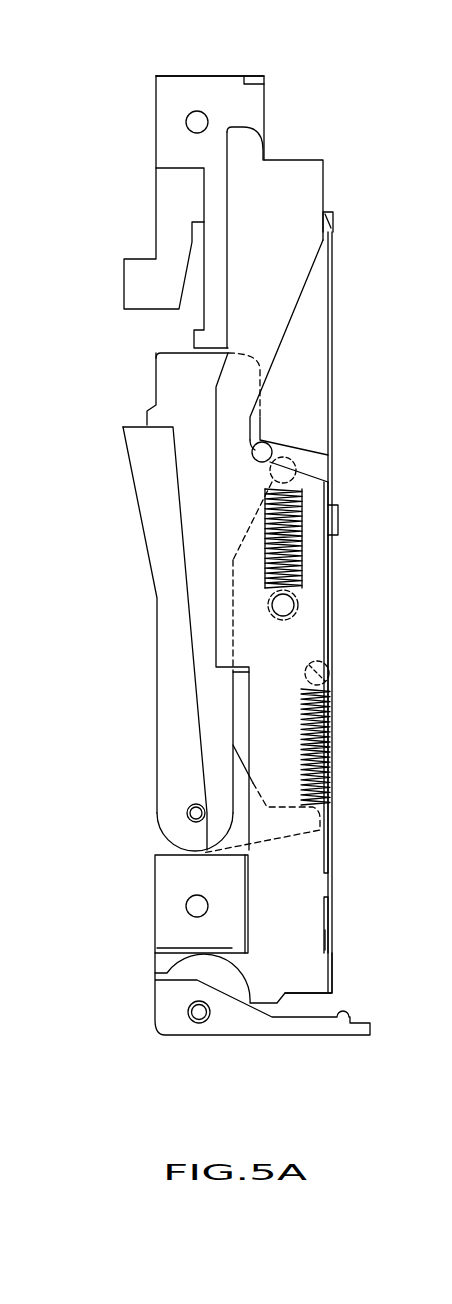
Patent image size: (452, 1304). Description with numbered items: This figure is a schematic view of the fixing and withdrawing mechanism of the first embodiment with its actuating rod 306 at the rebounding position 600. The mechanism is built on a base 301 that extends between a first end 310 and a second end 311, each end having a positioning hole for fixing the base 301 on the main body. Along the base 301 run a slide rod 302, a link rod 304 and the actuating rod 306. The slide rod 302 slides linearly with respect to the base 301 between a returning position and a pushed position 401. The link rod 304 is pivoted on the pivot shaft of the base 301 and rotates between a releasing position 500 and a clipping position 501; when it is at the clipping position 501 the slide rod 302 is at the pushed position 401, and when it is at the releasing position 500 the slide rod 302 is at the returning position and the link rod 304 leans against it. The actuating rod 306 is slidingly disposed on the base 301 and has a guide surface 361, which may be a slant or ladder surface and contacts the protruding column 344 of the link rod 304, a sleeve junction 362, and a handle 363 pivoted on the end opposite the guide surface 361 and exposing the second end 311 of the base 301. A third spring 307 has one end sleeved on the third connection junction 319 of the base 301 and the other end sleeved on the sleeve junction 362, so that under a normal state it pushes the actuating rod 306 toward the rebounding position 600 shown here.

The clipping position 501 is at (124, 93).
The base 301 is at (198, 83).
The first end 310 is at (156, 128).
The pushed position 401 is at (148, 168).
The releasing position 500 is at (305, 96).
The rebounding position 600 is at (330, 158).
The slide rod 302 is at (155, 332).
The guide surface 361 is at (283, 338).
The protruding column 344 is at (268, 451).
The sleeve junction 362 is at (299, 473).
The third spring 307 is at (300, 535).
The third connection junction 319 is at (288, 604).
The link rod 304 is at (160, 681).
The second end 311 is at (154, 903).
The actuating rod 306 is at (326, 885).
The handle 363 is at (284, 1036).